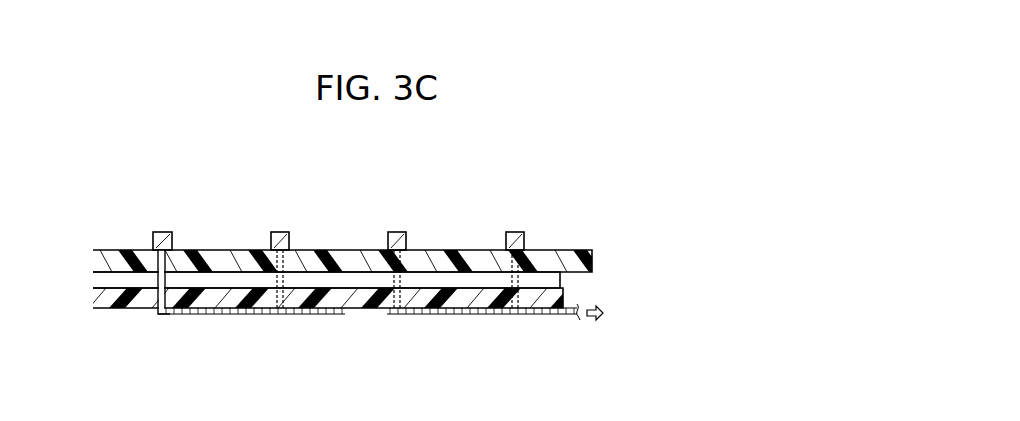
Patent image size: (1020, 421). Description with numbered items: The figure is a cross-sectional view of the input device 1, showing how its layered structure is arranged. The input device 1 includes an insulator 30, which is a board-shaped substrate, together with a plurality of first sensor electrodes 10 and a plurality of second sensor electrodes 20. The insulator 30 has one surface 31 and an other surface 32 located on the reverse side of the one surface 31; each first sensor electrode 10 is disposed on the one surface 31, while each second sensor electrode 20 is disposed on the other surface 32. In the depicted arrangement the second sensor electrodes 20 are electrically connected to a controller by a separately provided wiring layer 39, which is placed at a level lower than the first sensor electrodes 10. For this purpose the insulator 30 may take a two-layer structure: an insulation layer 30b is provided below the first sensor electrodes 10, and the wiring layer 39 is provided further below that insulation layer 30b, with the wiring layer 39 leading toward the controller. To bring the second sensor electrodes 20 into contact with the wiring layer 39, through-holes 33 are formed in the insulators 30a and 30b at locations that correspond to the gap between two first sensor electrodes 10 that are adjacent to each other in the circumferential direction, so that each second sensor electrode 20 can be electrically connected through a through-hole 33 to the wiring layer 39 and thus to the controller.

The input device 1 is at (581, 190).
The first sensor electrode 10 is at (562, 280).
The second sensor electrode 20 is at (516, 233).
The insulator 30 is at (411, 288).
The insulator 30a is at (592, 262).
The insulation layer 30b is at (543, 300).
The one surface 31 is at (345, 266).
The other surface 32 is at (443, 250).
The through-hole 33 is at (165, 310).
The wiring layer 39 is at (452, 314).